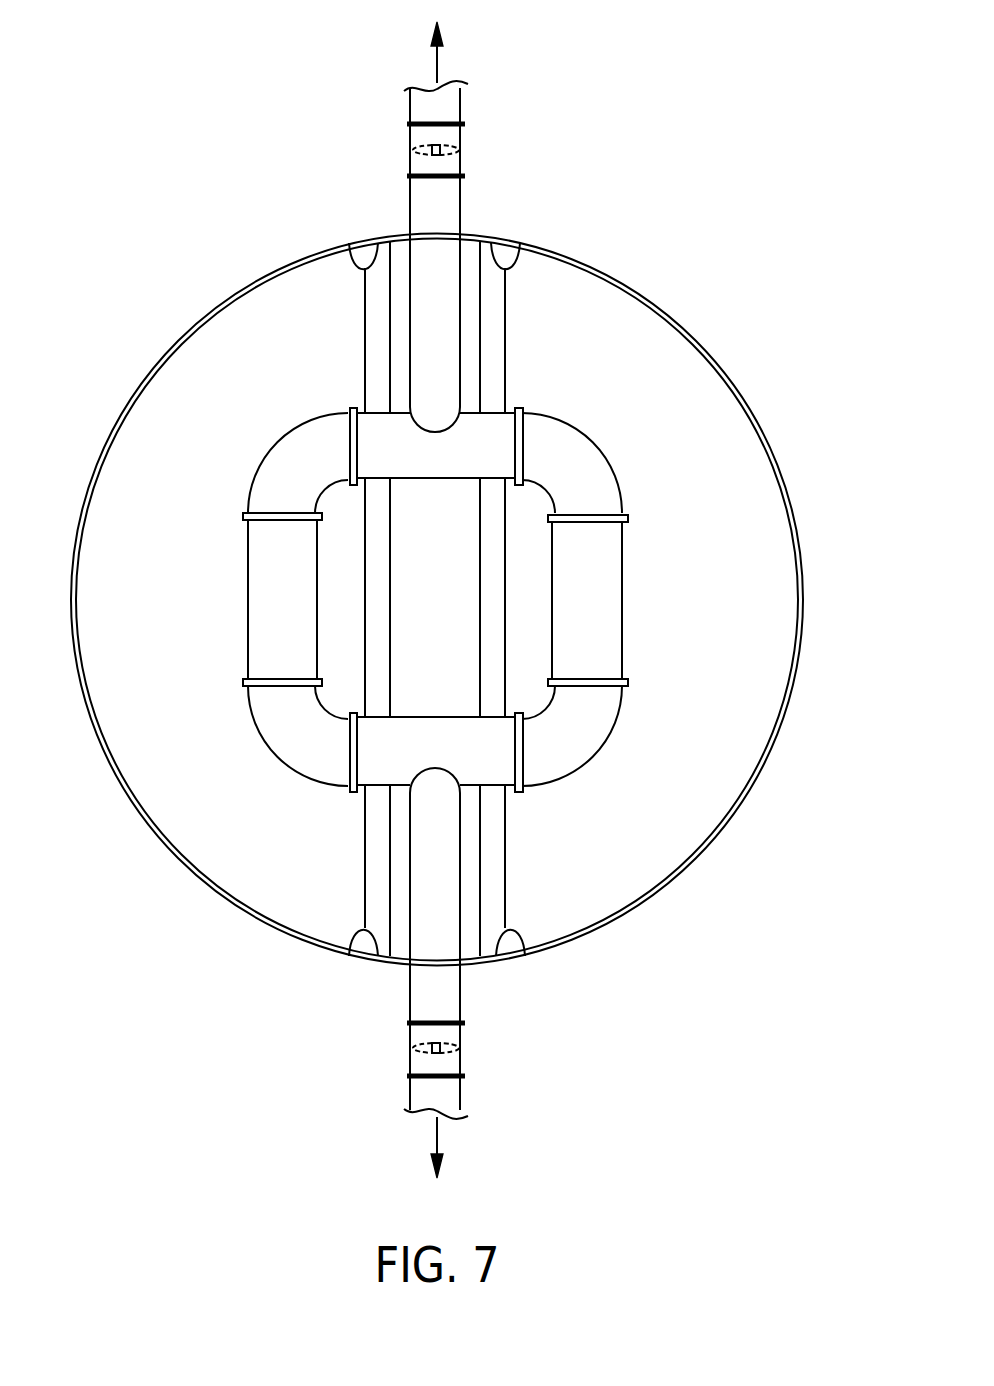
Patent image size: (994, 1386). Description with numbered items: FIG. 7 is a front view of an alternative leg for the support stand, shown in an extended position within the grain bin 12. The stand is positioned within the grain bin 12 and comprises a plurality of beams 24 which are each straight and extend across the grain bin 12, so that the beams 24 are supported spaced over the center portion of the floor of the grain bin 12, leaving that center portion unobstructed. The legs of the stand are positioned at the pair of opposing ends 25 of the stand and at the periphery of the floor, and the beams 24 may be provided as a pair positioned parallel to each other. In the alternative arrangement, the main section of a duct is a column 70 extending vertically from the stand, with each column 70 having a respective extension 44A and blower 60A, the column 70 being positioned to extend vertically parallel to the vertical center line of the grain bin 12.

The grain bin 12 is at (650, 255).
The beams 24 is at (377, 312).
The opposing ends 25 is at (362, 268).
The extension 44A is at (458, 297).
The blower 60A is at (410, 152).
The column 70 is at (390, 430).